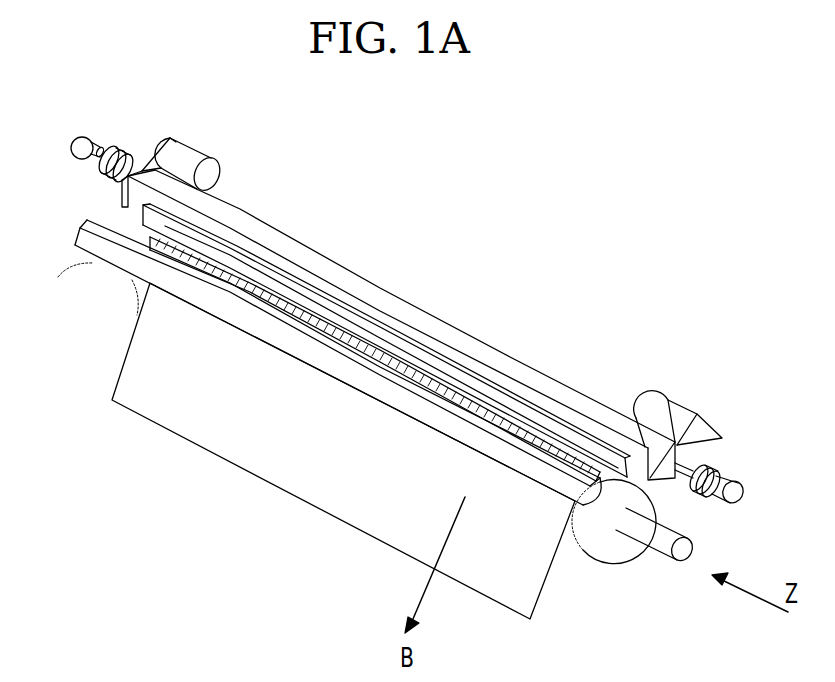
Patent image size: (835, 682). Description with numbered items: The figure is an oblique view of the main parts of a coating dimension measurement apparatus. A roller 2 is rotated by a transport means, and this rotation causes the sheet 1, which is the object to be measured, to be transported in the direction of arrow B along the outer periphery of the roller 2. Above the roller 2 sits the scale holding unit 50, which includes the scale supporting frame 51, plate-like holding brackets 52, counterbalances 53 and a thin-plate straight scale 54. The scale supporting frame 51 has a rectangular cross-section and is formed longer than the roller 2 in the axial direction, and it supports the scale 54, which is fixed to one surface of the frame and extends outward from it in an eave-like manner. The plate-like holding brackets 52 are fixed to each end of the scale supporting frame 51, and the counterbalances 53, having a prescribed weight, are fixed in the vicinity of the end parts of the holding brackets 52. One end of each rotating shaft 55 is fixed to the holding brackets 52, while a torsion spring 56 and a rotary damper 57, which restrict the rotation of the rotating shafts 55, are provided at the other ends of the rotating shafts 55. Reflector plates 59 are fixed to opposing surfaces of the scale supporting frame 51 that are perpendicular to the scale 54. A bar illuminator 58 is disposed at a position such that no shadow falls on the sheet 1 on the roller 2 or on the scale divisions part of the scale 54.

The sheet 1 is at (377, 517).
The roller 2 is at (613, 553).
The scale holding unit 50 is at (598, 363).
The scale supporting frame 51 is at (422, 308).
The plate-like holding bracket 52 is at (711, 430).
The counterbalance 53 is at (197, 158).
The thin-plate scale 54 is at (241, 266).
The rotating shaft 55 is at (700, 462).
The torsion spring 56 is at (722, 477).
The rotary damper 57 is at (745, 497).
The bar illuminator 58 is at (94, 262).
The reflector plate 59 is at (470, 382).